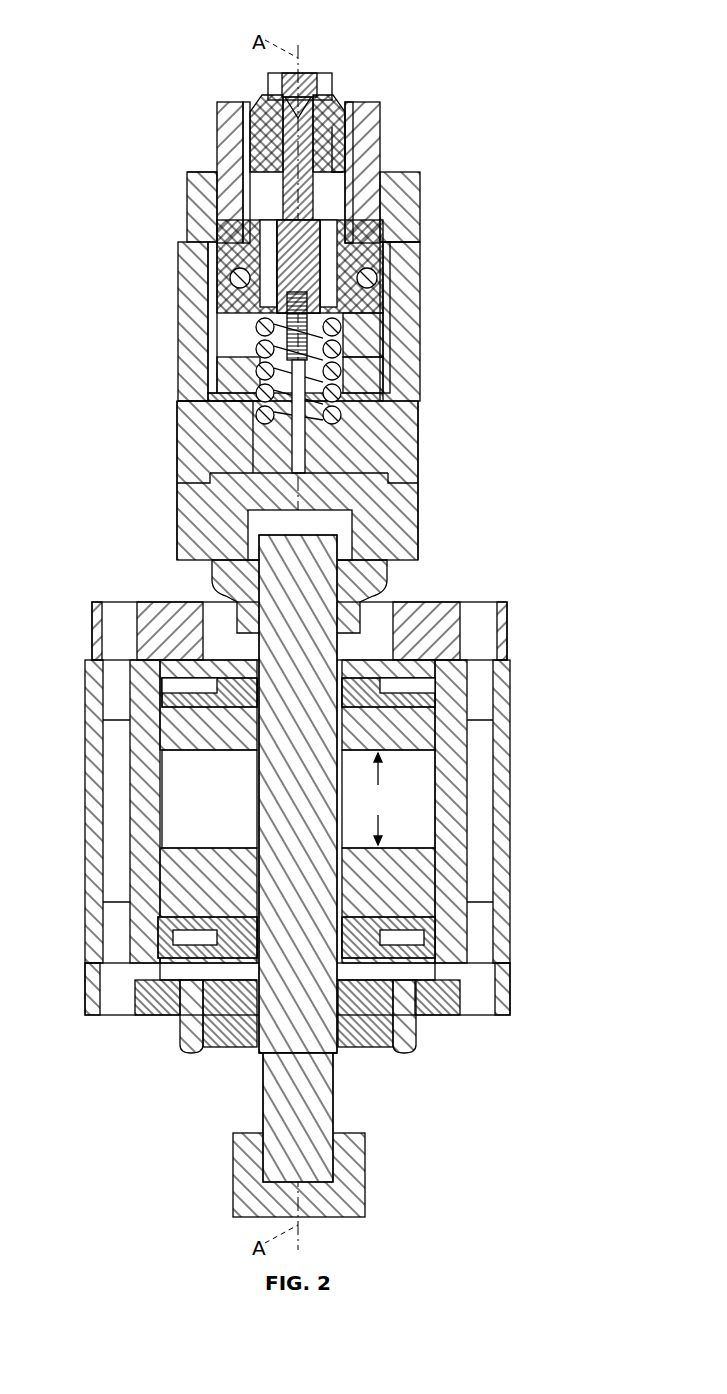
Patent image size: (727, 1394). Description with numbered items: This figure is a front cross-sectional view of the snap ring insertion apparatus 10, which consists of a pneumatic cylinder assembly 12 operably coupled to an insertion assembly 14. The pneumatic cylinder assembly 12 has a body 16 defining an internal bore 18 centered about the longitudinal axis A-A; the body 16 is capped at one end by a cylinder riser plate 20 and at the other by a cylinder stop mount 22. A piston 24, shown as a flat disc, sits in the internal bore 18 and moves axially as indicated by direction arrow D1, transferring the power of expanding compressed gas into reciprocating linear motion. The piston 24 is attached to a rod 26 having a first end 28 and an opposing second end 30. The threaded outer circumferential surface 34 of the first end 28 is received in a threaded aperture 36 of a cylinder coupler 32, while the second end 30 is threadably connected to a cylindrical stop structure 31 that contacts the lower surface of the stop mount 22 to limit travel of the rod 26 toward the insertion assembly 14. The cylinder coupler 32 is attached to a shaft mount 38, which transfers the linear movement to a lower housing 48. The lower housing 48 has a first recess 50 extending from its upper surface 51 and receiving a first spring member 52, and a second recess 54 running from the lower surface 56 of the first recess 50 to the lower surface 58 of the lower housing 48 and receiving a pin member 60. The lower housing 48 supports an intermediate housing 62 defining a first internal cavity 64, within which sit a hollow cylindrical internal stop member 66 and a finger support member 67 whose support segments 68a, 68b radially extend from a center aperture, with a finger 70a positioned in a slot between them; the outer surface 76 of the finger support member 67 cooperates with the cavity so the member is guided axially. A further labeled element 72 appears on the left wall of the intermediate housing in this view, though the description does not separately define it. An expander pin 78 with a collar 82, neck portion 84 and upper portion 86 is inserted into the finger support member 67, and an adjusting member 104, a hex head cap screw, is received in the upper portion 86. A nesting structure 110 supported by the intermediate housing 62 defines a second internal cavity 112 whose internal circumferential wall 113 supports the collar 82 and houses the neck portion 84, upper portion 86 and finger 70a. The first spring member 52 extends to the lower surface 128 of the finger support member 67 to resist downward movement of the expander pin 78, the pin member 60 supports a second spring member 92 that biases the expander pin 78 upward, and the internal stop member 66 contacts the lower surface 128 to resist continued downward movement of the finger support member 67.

The snap ring insertion apparatus 10 is at (486, 86).
The pneumatic cylinder assembly 12 is at (512, 815).
The insertion assembly 14 is at (412, 222).
The body 16 is at (510, 755).
The internal bore 18 is at (160, 822).
The cylinder riser plate 20 is at (507, 628).
The cylinder stop mount 22 is at (510, 995).
The piston 24 is at (433, 835).
The rod 26 is at (257, 793).
The first end 28 is at (345, 540).
The second end 30 is at (336, 1112).
The stop structure 31 is at (365, 1175).
The cylinder coupler 32 is at (212, 578).
The outer circumferential surface 34 is at (392, 563).
The threaded aperture 36 is at (212, 560).
The shaft mount 38 is at (418, 505).
The lower housing 48 is at (418, 462).
The first recess 50 is at (220, 420).
The upper surface 51 is at (385, 403).
The first spring member 52 is at (225, 380).
The second recess 54 is at (305, 476).
The lower surface 56 is at (262, 440).
The lower surface 58 is at (177, 485).
The pin member 60 is at (306, 445).
The intermediate housing 62 is at (362, 333).
The first internal cavity 64 is at (365, 366).
The internal stop member 66 is at (212, 352).
The finger support member 67 is at (420, 242).
The support segment 68a is at (225, 232).
The support segment 68b is at (378, 281).
The finger 70a is at (187, 172).
The housing wall 72 is at (195, 252).
The outer surface 76 is at (388, 256).
The expander pin 78 is at (340, 176).
The collar 82 is at (240, 142).
The neck portion 84 is at (360, 128).
The upper portion 86 is at (333, 98).
The second spring member 92 is at (258, 333).
The adjusting member 104 is at (305, 75).
The nesting structure 110 is at (420, 186).
The second internal cavity 112 is at (318, 160).
The internal circumferential wall 113 is at (243, 132).
The lower surface 128 is at (312, 322).
The direction arrow D1 is at (378, 799).